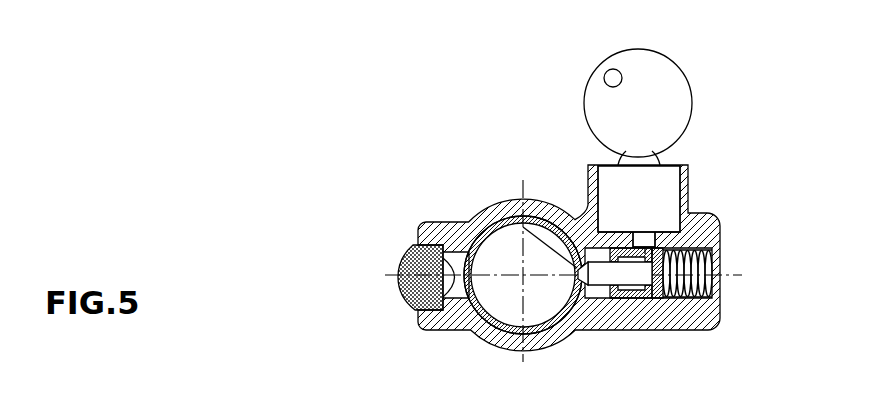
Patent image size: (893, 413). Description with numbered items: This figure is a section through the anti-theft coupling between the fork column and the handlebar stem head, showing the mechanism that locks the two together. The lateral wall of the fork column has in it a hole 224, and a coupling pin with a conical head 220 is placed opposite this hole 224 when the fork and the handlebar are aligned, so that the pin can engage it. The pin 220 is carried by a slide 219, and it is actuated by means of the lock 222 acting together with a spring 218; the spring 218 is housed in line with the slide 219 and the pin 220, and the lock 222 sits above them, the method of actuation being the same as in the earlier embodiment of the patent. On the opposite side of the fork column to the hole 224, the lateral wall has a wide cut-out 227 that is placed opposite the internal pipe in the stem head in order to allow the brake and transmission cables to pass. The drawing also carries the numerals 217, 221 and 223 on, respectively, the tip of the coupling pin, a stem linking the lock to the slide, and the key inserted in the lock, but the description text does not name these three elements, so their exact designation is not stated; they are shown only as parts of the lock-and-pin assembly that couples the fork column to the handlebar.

The valve pin tip 217 is at (582, 266).
The spring 218 is at (692, 298).
The slide 219 is at (638, 290).
The coupling pin with a conical head 220 is at (606, 280).
The actuating stem 221 is at (637, 232).
The lock 222 is at (613, 170).
The key 223 is at (596, 74).
The hole 224 is at (512, 219).
The wide cut-out 227 is at (477, 241).